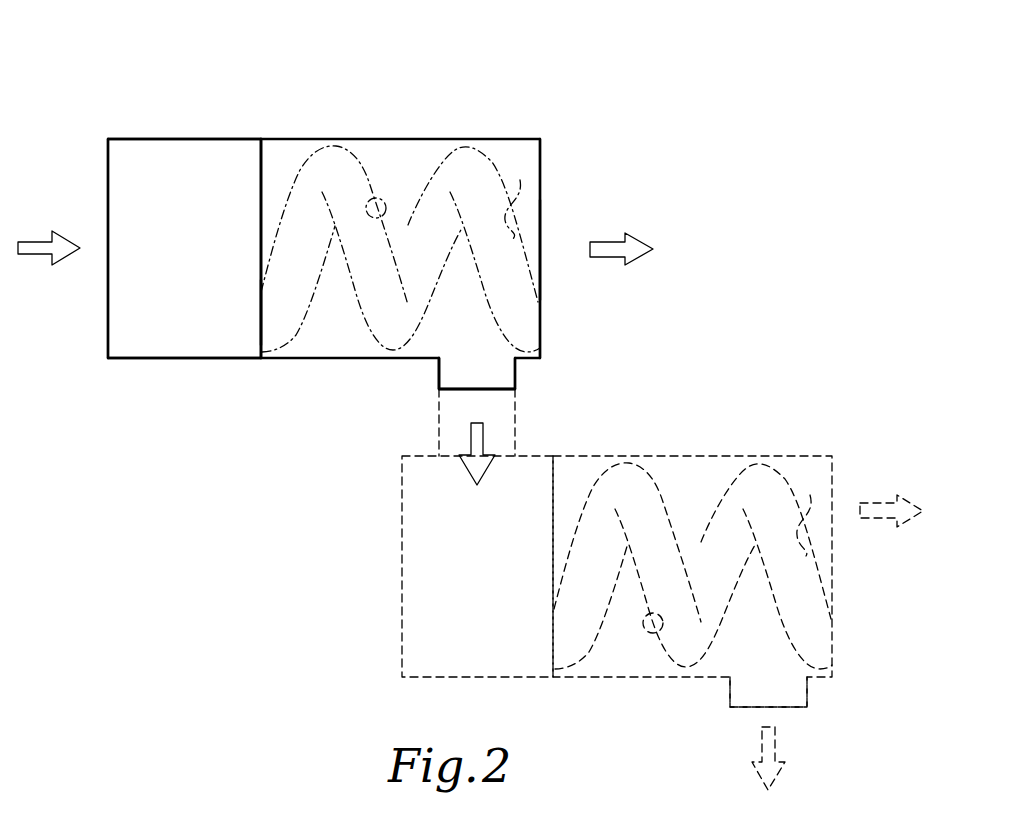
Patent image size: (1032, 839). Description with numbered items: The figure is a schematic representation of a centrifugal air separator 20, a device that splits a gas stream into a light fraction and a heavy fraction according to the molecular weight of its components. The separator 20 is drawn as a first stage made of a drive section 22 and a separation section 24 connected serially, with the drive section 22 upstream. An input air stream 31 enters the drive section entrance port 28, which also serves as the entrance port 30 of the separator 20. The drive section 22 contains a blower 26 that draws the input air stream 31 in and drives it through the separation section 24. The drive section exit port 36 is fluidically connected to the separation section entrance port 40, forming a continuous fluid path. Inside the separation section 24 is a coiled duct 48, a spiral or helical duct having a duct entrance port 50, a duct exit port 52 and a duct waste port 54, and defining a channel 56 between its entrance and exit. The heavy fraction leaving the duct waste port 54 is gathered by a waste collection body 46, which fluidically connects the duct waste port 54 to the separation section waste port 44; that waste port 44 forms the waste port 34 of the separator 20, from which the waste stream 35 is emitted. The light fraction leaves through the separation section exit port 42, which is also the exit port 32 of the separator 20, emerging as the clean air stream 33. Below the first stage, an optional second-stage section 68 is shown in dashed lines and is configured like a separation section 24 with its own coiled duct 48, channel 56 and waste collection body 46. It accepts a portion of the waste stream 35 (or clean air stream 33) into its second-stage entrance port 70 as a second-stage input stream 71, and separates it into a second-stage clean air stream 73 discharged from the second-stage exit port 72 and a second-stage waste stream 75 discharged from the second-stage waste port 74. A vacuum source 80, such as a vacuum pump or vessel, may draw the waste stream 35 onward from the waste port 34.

The centrifugal air separator 20 is at (466, 367).
The drive section 22 is at (157, 133).
The separation section 24 is at (323, 133).
The blower 26 is at (210, 138).
The drive section entrance port 28 is at (108, 289).
The entrance port 30 is at (102, 341).
The input air stream 31 is at (34, 240).
The exit port 32 is at (619, 148).
The clean air stream 33 is at (610, 242).
The waste port 34 is at (500, 403).
The waste stream 35 is at (472, 440).
The drive section exit port 36 is at (268, 322).
The separation section entrance port 40 is at (252, 338).
The separation section exit port 42 is at (586, 196).
The separation section waste port 44 is at (450, 392).
The waste collection body 46 is at (584, 402).
The coiled duct 48 is at (378, 195).
The duct entrance port 50 is at (250, 312).
The duct exit port 52 is at (540, 317).
The duct waste port 54 is at (520, 180).
The channel 56 is at (387, 208).
The second-stage section 68 is at (622, 615).
The second-stage entrance port 70 is at (477, 389).
The second-stage input stream 71 is at (476, 439).
The second-stage exit port 72 is at (852, 593).
The second-stage clean air stream 73 is at (866, 503).
The second-stage waste port 74 is at (745, 707).
The second-stage waste stream 75 is at (777, 737).
The vacuum source 80 is at (402, 582).